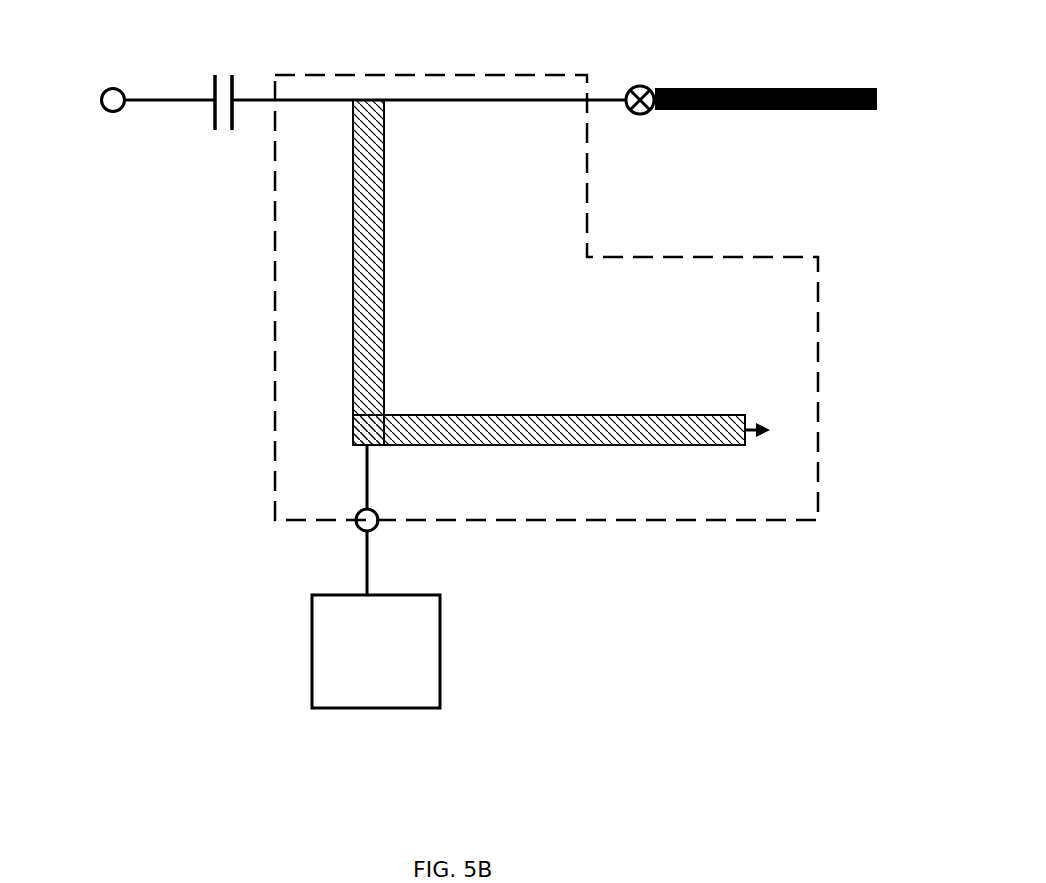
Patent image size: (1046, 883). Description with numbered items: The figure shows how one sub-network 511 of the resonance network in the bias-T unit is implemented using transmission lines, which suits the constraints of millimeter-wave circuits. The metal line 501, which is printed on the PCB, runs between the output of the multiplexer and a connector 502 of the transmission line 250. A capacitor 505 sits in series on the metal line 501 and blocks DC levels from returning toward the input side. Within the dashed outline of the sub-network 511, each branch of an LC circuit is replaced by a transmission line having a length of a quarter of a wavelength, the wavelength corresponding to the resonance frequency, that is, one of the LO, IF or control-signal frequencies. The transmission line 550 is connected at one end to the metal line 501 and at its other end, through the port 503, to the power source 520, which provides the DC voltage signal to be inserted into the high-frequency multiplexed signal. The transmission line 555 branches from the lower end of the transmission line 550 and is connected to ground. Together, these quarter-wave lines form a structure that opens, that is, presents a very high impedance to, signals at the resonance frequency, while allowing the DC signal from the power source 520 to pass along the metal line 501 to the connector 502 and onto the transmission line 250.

The metal line 501 is at (111, 88).
The capacitor 505 is at (234, 80).
The sub-network 511 is at (675, 257).
The transmission line 550 is at (352, 288).
The transmission line 555 is at (612, 445).
The port 503 is at (364, 509).
The power source 520 is at (376, 619).
The connector 502 is at (643, 86).
The transmission line 250 is at (795, 88).